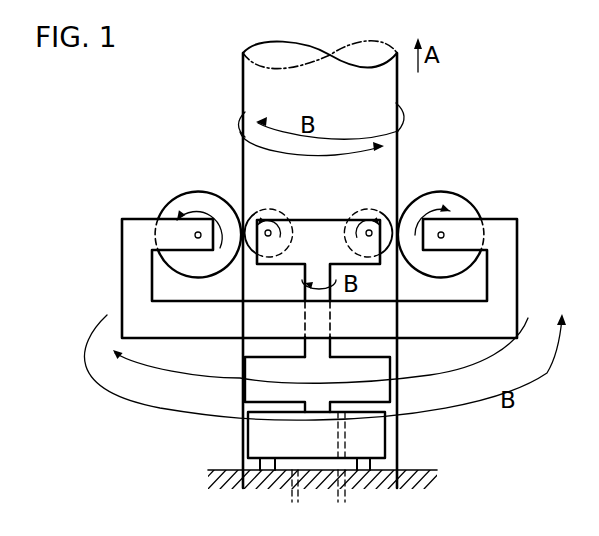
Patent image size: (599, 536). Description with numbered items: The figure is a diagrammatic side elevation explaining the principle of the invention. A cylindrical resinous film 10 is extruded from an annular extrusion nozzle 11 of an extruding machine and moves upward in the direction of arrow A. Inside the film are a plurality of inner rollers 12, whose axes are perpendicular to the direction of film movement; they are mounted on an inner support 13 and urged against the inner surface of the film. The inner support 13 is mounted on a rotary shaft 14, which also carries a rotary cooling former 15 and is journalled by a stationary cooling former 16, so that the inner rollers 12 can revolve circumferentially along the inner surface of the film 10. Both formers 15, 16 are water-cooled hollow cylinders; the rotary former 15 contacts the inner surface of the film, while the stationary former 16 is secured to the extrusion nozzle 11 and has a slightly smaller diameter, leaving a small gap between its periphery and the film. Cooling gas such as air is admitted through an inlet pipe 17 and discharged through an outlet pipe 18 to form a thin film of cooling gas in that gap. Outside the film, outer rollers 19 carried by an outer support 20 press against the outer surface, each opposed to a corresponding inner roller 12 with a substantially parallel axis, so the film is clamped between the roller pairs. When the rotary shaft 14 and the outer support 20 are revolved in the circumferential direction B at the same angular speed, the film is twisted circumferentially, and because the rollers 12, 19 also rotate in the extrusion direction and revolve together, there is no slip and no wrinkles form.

The cylindrical resinous film 10 is at (398, 102).
The annular extrusion nozzle 11 is at (398, 478).
The inner rollers 12 is at (251, 212).
The inner support 13 is at (309, 234).
The rotary shaft 14 is at (300, 350).
The rotary cooling former 15 is at (256, 393).
The stationary cooling former 16 is at (375, 430).
The inlet pipe 17 is at (347, 487).
The outlet pipe 18 is at (292, 488).
The outer rollers 19 is at (176, 200).
The outer support 20 is at (508, 242).